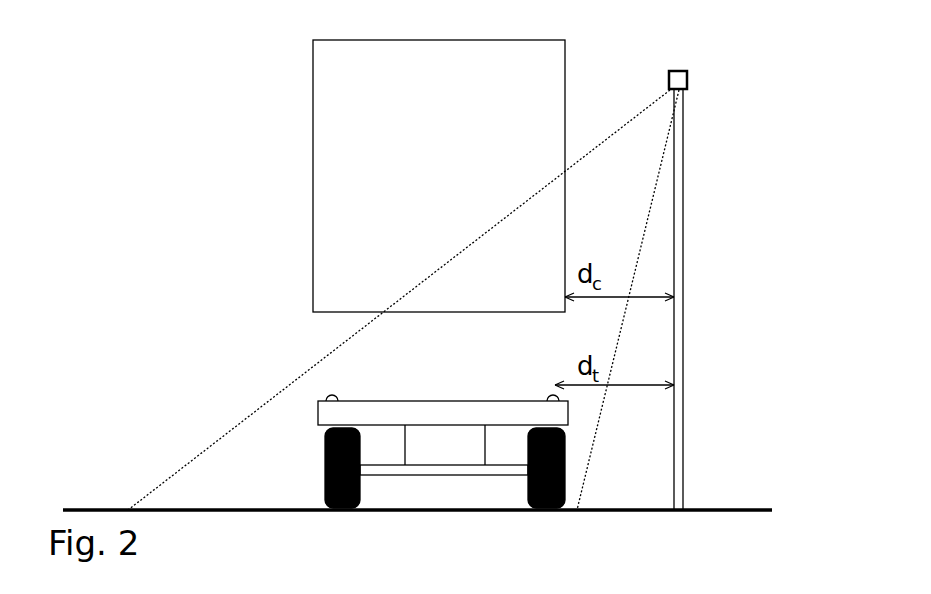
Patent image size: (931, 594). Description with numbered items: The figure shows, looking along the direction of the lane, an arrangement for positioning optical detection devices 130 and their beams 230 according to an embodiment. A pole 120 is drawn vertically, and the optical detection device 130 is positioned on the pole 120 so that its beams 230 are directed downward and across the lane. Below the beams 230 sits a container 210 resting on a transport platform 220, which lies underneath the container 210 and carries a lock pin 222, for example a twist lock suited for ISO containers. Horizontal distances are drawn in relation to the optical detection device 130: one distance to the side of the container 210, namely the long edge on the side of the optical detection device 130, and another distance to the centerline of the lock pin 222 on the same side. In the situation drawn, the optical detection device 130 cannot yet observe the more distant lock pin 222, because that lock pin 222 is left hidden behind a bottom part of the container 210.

The pole 120 is at (685, 433).
The optical detection device 130 is at (690, 78).
The container 210 is at (313, 75).
The transport platform 220 is at (430, 400).
The lock pin 222 is at (322, 398).
The beams 230 is at (658, 110).